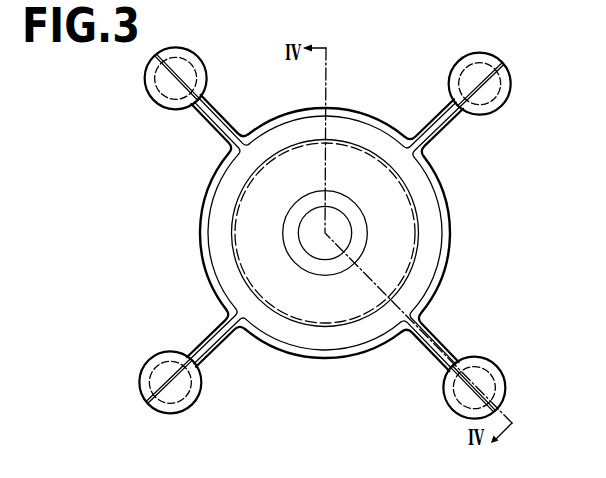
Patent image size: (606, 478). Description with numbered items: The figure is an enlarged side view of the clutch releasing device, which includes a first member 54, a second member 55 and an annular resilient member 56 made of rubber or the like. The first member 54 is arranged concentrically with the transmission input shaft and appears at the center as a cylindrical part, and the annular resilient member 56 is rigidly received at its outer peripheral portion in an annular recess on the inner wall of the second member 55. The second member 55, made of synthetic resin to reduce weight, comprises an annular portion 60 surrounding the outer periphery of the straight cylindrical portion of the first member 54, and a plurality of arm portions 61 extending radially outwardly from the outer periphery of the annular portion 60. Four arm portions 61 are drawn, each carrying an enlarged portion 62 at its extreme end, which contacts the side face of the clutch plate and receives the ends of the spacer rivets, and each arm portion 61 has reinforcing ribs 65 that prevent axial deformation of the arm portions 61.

The first member 54 is at (446, 235).
The second member 55 is at (390, 120).
The annular resilient member 56 is at (228, 219).
The annular portion 60 is at (348, 113).
The arm portions 61 is at (210, 128).
The enlarged portions 62 is at (202, 62).
The reinforcing ribs 65 is at (210, 108).